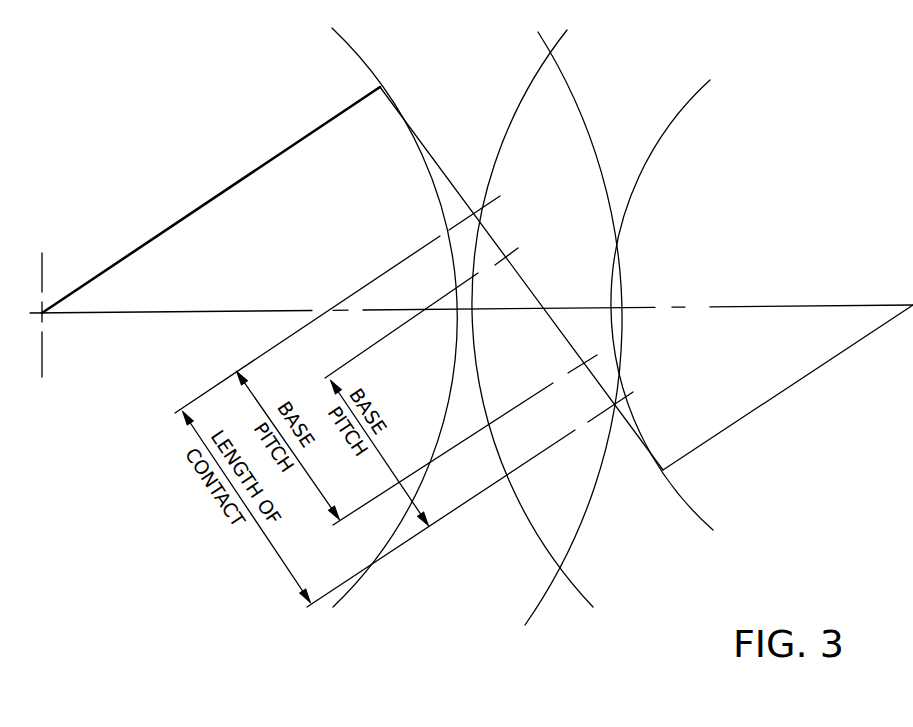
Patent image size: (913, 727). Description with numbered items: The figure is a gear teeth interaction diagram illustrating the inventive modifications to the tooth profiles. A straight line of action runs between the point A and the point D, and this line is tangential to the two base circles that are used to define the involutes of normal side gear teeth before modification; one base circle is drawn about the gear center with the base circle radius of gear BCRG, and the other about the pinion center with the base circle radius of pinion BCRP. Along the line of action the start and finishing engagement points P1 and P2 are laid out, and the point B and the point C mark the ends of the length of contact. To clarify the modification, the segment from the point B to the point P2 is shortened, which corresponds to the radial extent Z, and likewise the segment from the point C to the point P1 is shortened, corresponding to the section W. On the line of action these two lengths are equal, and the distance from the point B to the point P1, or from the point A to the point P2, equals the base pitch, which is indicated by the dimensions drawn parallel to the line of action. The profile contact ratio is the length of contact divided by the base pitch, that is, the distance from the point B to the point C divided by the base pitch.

The point A is at (394, 317).
The point B is at (476, 204).
The point C is at (617, 407).
The point D is at (662, 305).
The finishing engagement point P1 is at (585, 352).
The start engagement point P2 is at (520, 265).
The radial extent Z is at (503, 231).
The section W is at (615, 375).
The base circle radius of gear BCRG is at (211, 200).
The base circle radius of pinion BCRP is at (788, 387).